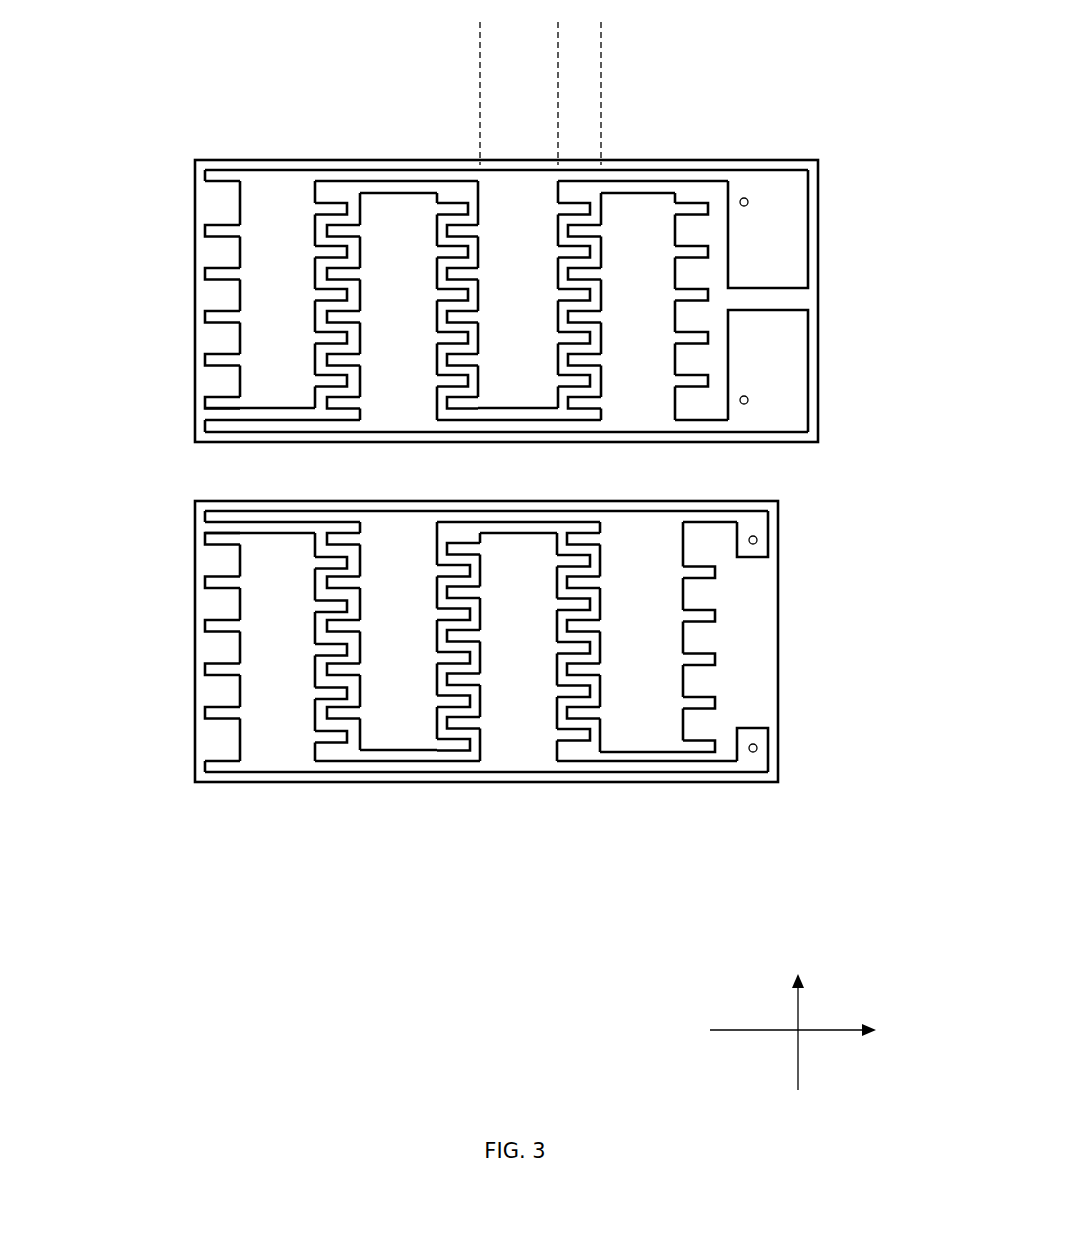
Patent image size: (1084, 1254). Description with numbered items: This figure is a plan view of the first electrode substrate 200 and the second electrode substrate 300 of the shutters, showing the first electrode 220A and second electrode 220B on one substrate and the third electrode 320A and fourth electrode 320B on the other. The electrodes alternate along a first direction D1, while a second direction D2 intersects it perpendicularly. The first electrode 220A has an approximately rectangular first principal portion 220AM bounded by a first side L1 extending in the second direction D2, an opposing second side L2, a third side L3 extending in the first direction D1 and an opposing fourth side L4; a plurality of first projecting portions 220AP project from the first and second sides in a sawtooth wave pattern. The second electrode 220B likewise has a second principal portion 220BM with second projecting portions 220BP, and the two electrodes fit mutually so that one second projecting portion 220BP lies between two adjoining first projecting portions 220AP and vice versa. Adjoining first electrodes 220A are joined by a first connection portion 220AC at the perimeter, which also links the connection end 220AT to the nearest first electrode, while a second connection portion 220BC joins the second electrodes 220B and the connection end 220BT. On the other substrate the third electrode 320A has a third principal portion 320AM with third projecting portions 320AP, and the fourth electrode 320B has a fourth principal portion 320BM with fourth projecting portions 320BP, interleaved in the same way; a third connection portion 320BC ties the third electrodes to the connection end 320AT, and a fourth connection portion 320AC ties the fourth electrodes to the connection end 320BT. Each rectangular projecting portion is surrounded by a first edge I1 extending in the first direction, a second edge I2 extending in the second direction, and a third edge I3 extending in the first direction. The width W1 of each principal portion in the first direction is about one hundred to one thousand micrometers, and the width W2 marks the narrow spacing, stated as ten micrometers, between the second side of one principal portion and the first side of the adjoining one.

The first electrode substrate 200 is at (838, 285).
The first electrode 220A is at (268, 160).
The first connection portion 220AC is at (438, 172).
The first principal portion 220AM is at (255, 293).
The first projecting portions 220AP is at (236, 197).
The connection end 220AT is at (798, 232).
The second electrode 220B is at (633, 185).
The second connection portion 220BC is at (515, 426).
The second principal portion 220BM is at (660, 282).
The second projecting portions 220BP is at (566, 273).
The connection end 220BT is at (798, 412).
The second electrode substrate 300 is at (798, 653).
The third electrode 320A is at (268, 782).
The fourth connection portion 320AC is at (457, 512).
The third principal portion 320AM is at (255, 653).
The third projecting portions 320AP is at (222, 712).
The connection end 320AT is at (760, 758).
The fourth electrode 320B is at (640, 764).
The third connection portion 320BC is at (447, 775).
The fourth principal portion 320BM is at (675, 670).
The fourth projecting portions 320BP is at (573, 668).
The connection end 320BT is at (770, 535).
The width of principal portion W1 is at (552, 40).
The width of gap W2 is at (595, 40).
The first side L1 is at (240, 200).
The second side L2 is at (326, 186).
The third side L3 is at (297, 172).
The fourth side L4 is at (258, 522).
The first edge I1 is at (222, 352).
The second edge I2 is at (212, 356).
The third edge I3 is at (222, 368).
The first direction D1 is at (815, 1044).
The second direction D2 is at (798, 1015).